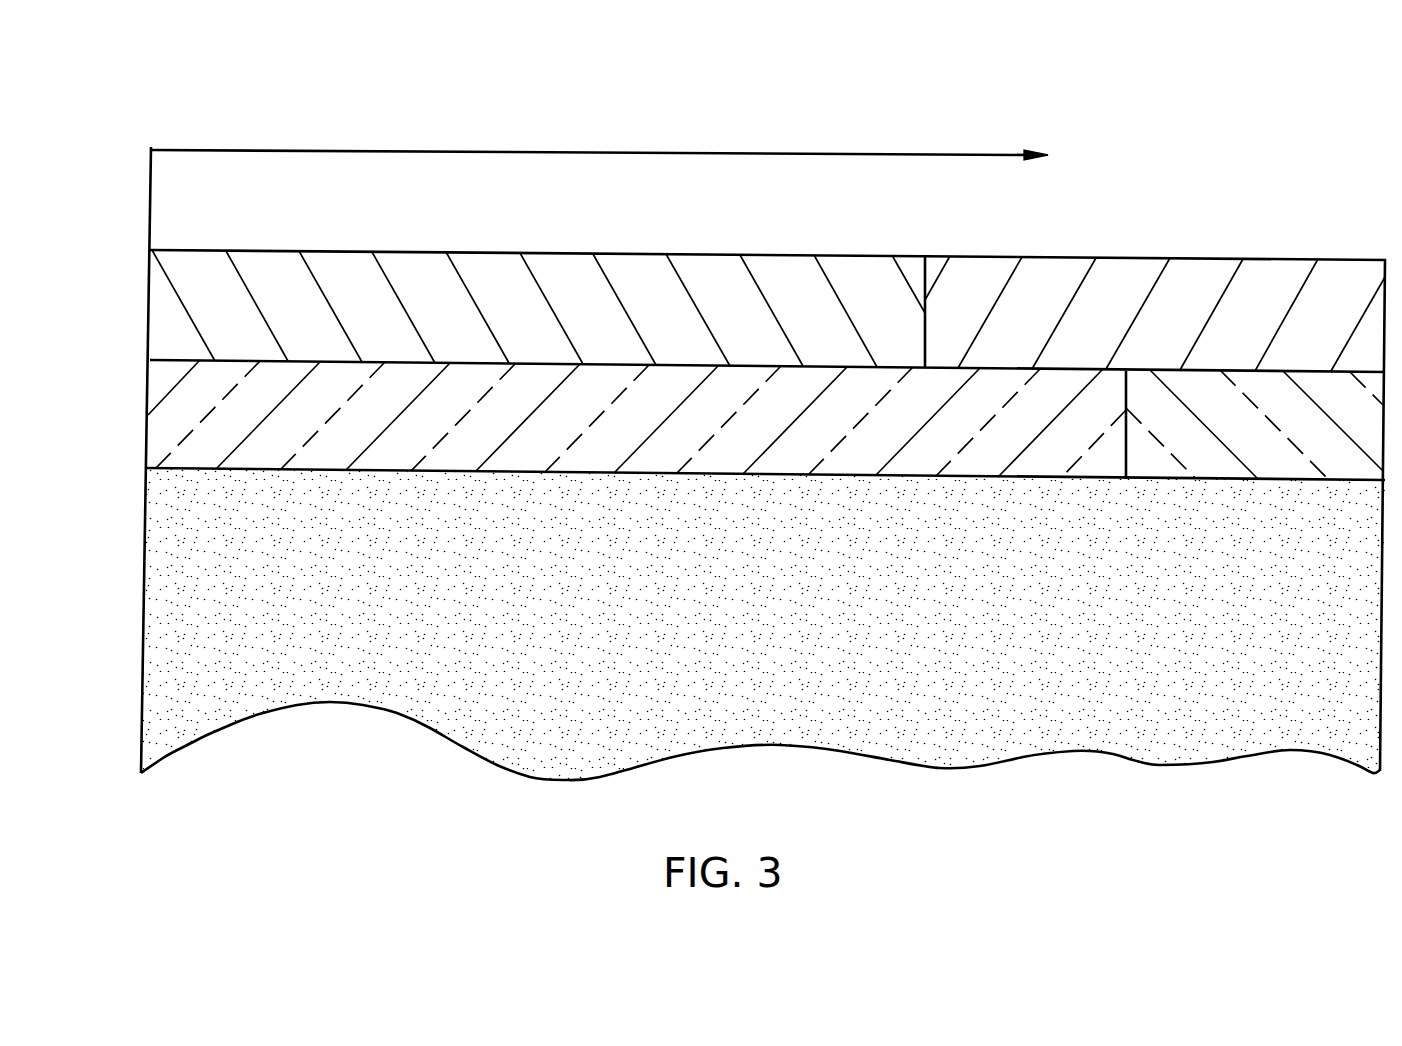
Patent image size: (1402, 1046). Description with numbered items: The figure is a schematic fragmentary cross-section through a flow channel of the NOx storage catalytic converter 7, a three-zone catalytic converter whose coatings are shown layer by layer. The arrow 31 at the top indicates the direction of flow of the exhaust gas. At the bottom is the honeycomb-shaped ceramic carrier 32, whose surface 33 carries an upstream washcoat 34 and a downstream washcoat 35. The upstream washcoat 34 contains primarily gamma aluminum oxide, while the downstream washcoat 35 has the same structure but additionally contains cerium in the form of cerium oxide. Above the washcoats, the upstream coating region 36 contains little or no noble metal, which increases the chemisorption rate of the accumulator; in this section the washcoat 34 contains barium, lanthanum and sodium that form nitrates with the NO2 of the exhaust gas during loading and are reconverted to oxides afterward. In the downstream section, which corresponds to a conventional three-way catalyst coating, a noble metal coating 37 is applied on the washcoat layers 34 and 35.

The NOx storage catalytic converter 7 is at (1150, 235).
The arrow 31 is at (608, 150).
The honeycomb-shaped ceramic carrier 32 is at (1115, 737).
The surface 33 is at (197, 468).
The upstream washcoat 34 is at (657, 437).
The downstream washcoat 35 is at (1273, 441).
The upstream coating region 36 is at (553, 322).
The noble metal coating 37 is at (1172, 327).